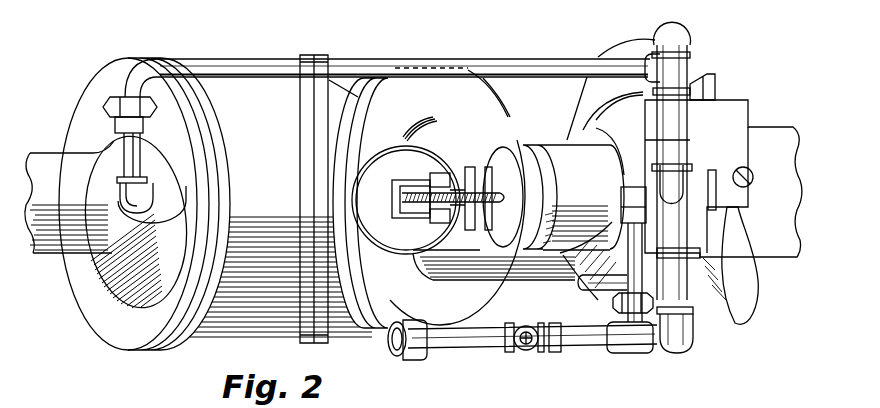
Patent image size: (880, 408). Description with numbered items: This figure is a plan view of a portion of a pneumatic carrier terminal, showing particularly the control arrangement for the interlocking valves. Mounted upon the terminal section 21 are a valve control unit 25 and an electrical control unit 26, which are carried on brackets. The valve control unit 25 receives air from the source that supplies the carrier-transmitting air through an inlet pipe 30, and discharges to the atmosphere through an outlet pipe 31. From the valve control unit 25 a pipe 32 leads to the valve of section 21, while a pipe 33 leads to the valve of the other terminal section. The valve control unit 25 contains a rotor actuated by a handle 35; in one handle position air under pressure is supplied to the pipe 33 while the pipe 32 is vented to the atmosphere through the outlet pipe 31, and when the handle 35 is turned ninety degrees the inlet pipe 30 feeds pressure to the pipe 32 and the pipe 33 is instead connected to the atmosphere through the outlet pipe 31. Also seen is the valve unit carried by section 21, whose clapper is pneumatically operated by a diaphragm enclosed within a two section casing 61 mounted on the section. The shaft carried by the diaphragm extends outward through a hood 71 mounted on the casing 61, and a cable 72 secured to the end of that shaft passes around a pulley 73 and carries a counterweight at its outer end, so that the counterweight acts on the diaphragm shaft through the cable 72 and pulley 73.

The section 21 is at (448, 174).
The valve control unit 25 is at (683, 237).
The electrical control unit 26 is at (723, 179).
The pipe 30 is at (623, 327).
The pipe 31 is at (680, 115).
The pipe 32 is at (494, 338).
The pipe 33 is at (261, 62).
The handle 35 is at (748, 284).
The two section casing 61 is at (522, 182).
The hood 71 is at (571, 168).
The cable 72 is at (488, 154).
The pulley 73 is at (420, 190).